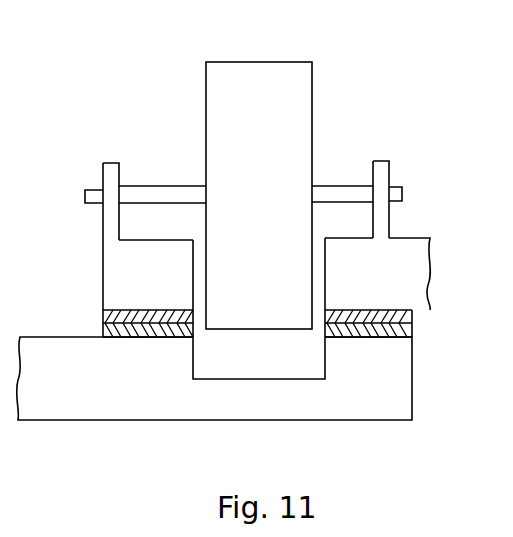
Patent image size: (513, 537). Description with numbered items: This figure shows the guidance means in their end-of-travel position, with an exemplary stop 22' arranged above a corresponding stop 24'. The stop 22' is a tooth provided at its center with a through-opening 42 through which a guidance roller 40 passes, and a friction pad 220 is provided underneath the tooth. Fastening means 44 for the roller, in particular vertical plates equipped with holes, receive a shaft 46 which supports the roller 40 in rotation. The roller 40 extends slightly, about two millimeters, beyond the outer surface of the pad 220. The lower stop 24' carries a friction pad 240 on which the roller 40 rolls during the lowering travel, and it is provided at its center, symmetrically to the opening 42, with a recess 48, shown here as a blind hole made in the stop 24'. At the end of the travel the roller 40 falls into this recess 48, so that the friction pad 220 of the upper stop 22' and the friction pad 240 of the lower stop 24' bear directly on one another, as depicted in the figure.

The guidance roller 40 is at (262, 68).
The through-opening 42 is at (319, 244).
The fastening means 44 is at (115, 166).
The shaft 46 is at (165, 193).
The recess 48 is at (274, 357).
The stop 22' is at (271, 250).
The friction pad 220 is at (108, 318).
The friction pad 240 is at (412, 330).
The stop 24' is at (214, 402).